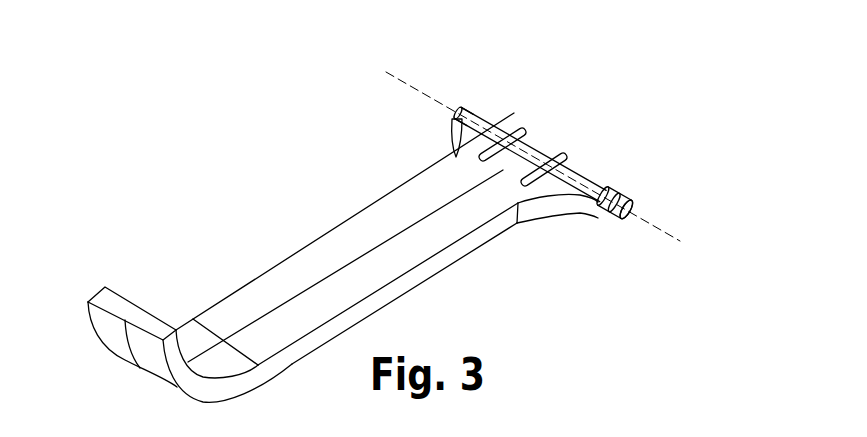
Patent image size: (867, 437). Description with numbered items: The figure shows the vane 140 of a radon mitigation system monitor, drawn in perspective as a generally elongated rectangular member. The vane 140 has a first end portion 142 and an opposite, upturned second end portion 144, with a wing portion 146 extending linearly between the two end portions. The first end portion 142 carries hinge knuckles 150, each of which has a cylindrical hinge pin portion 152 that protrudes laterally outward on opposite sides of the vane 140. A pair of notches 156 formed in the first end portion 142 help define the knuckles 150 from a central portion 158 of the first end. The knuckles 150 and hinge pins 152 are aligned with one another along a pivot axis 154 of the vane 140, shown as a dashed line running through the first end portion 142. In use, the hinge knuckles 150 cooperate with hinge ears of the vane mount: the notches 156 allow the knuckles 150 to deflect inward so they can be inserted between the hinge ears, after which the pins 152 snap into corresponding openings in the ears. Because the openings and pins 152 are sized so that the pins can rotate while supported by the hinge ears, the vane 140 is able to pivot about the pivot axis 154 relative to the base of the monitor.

The vane 140 is at (229, 143).
The first end portion 142 is at (501, 130).
The second end portion 144 is at (156, 352).
The wing portion 146 is at (323, 259).
The hinge knuckles 150 is at (471, 109).
The hinge pin portion 152 is at (455, 120).
The pivot axis 154 is at (397, 70).
The notches 156 is at (521, 136).
The central portion 158 is at (503, 170).